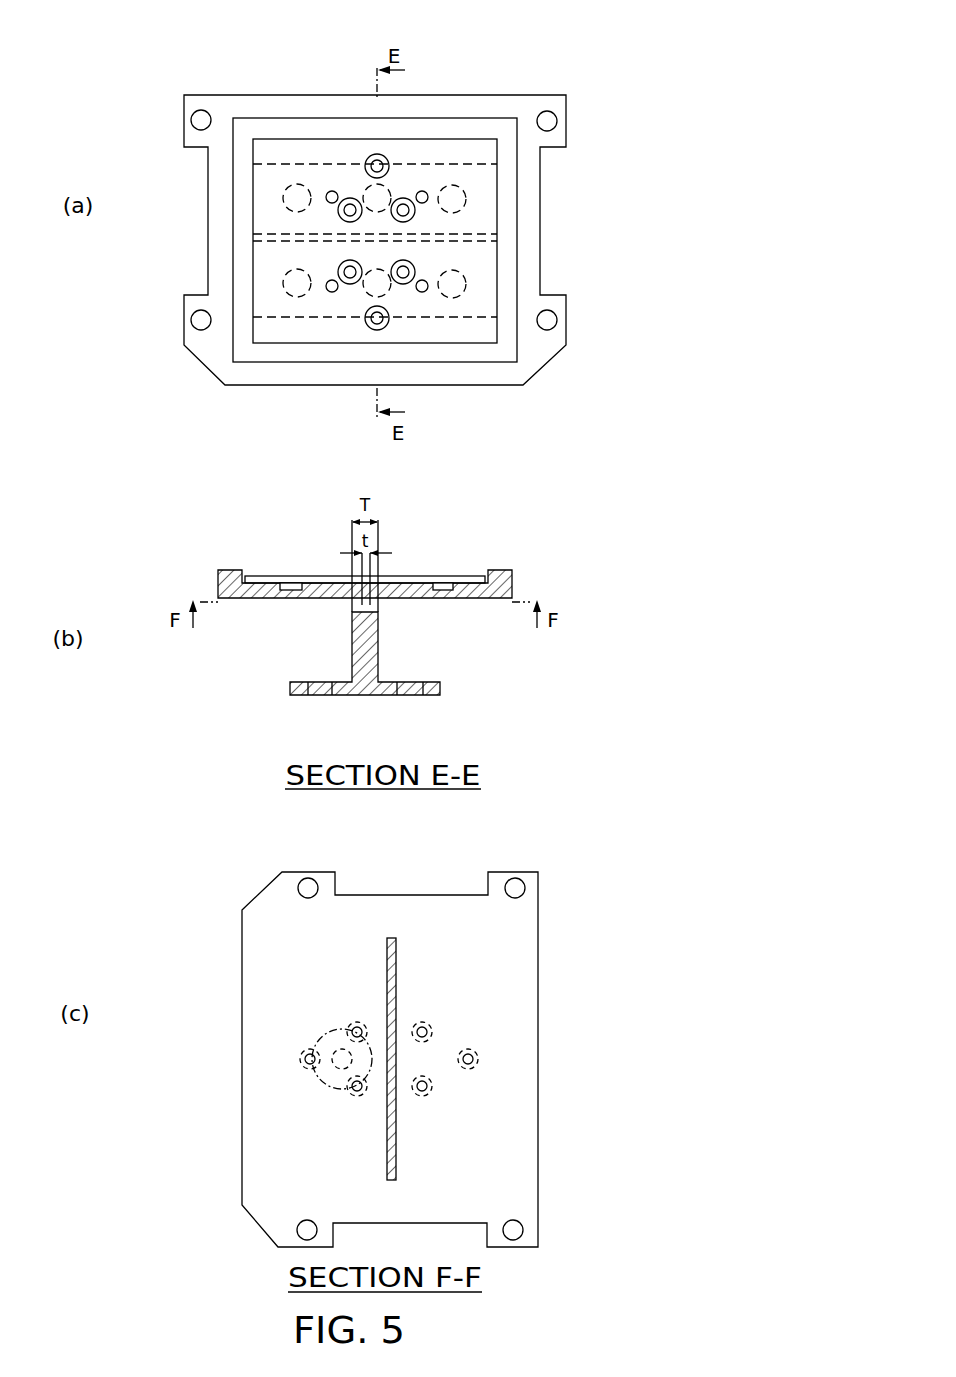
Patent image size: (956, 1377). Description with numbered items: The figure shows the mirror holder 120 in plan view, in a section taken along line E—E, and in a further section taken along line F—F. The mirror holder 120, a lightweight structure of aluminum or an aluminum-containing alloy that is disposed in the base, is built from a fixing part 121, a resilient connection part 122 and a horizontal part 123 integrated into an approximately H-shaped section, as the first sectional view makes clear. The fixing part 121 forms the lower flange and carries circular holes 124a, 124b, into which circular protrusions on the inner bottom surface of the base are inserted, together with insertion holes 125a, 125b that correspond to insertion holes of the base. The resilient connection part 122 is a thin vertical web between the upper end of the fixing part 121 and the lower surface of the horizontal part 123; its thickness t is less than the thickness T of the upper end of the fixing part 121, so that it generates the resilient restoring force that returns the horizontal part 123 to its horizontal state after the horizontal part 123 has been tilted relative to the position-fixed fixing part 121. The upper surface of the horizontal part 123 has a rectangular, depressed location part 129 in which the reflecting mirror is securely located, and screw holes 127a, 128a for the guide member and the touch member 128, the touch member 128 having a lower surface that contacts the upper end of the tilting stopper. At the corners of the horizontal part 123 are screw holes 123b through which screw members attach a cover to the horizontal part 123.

In FIG. 5A, the mirror holder 120 is at (590, 77).
In FIG. 5B, the mirror holder 120 is at (528, 543).
In FIG. 5A, the fixing part 121 is at (440, 172).
In FIG. 5B, the fixing part 121 is at (375, 697).
In FIG. 5A, the resilient connection part 122 is at (460, 236).
In FIG. 5B, the resilient connection part 122 is at (352, 605).
In FIG. 5C, the resilient connection part 122 is at (396, 1122).
In FIG. 5A, the horizontal part 123 is at (523, 110).
In FIG. 5B, the horizontal part 123 is at (322, 587).
In FIG. 5C, the horizontal part 123 is at (267, 913).
In FIG. 5A, the screw holes 123b is at (201, 118).
In FIG. 5C, the screw holes 123b is at (343, 882).
In FIG. 5A, the circular hole 124a is at (462, 201).
In FIG. 5A, the circular hole 124b is at (292, 290).
In FIG. 5A, the insertion hole 125a is at (370, 193).
In FIG. 5B, the insertion hole 125a is at (315, 697).
In FIG. 5A, the insertion hole 125b is at (368, 291).
In FIG. 5B, the insertion hole 125b is at (418, 697).
In FIG. 5A, the screw hole / guide member-fixing screw member 127a is at (372, 157).
In FIG. 5B, the screw hole / guide member-fixing screw member 127a is at (285, 582).
In FIG. 5C, the screw hole / guide member-fixing screw member 127a is at (427, 1030).
In FIG. 5C, the touch member 128 is at (317, 1078).
In FIG. 5A, the screw hole / touch member-fixing screw member 128a is at (405, 282).
In FIG. 5B, the screw hole / touch member-fixing screw member 128a is at (440, 597).
In FIG. 5C, the screw hole / touch member-fixing screw member 128a is at (353, 1027).
In FIG. 5A, the location part 129 is at (240, 260).
In FIG. 5B, the location part 129 is at (423, 573).